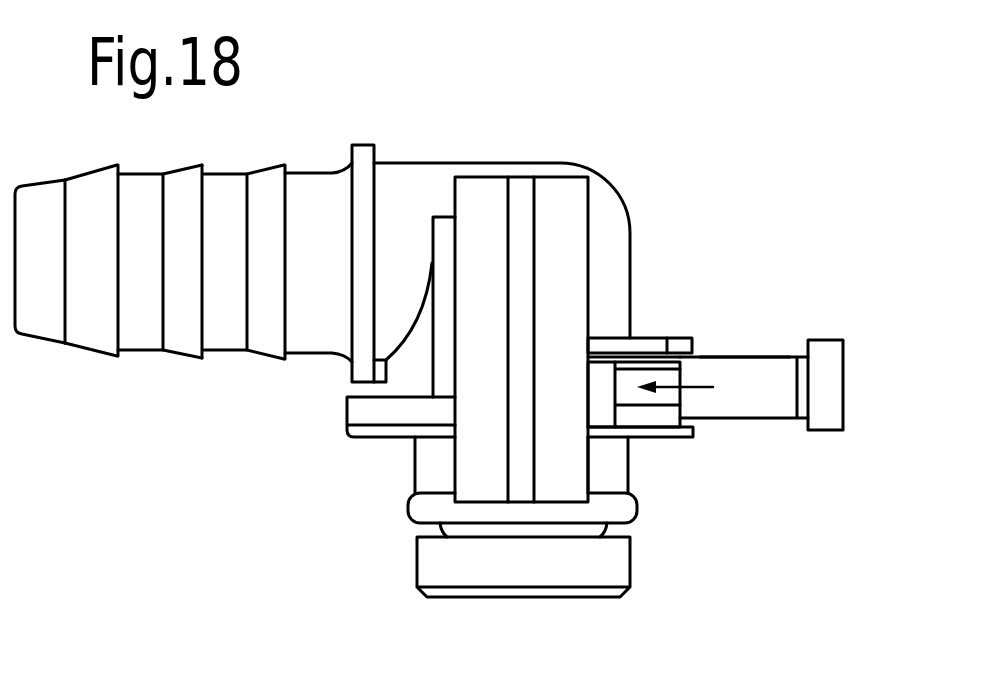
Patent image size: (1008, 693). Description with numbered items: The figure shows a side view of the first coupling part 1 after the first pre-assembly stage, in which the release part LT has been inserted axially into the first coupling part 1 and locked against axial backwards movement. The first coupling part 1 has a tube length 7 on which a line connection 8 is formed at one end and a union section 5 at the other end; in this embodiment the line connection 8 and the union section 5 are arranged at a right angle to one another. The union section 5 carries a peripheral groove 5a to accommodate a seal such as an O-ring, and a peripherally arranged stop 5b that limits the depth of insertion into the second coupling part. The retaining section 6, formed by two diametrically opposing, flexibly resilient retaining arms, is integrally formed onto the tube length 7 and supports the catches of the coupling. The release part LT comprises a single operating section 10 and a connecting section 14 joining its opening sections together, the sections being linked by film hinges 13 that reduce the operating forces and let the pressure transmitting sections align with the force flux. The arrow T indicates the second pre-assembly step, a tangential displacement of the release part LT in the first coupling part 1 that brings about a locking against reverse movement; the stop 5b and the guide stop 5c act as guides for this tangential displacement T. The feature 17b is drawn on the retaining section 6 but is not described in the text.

The first coupling part 1 is at (229, 375).
The union section 5 is at (610, 568).
The peripheral groove 5a is at (437, 532).
The stop 5b is at (691, 430).
The guide stop 5c is at (643, 343).
The retaining section 6 is at (567, 212).
The tube length 7 is at (417, 195).
The line connection 8 is at (97, 335).
The operating section 10 is at (827, 390).
The film hinge 13 is at (802, 368).
The connecting section 14 is at (360, 418).
The inner wall line of cap member 17b is at (527, 237).
The tangential displacement arrow T is at (700, 388).
The release part LT is at (745, 375).